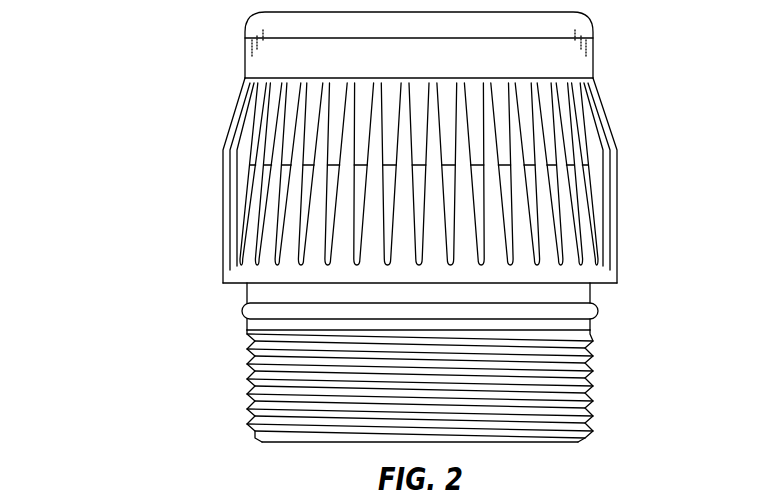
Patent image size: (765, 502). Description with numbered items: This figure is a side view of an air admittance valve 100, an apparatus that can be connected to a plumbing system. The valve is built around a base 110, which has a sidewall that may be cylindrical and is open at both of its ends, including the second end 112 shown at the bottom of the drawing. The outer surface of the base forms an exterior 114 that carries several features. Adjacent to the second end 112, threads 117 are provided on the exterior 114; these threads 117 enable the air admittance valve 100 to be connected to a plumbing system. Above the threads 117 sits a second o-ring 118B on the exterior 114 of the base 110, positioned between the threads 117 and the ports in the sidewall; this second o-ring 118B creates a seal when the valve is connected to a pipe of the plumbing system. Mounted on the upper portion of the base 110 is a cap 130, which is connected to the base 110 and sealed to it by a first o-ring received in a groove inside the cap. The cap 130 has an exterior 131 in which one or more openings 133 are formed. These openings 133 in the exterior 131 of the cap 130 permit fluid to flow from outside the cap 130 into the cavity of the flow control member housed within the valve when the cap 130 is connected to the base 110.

The air admittance valve 100 is at (104, 70).
The base 110 is at (590, 292).
The second end 112 is at (267, 446).
The exterior 114 is at (520, 292).
The threads 117 is at (250, 390).
The second o-ring 118B is at (243, 312).
The cap 130 is at (246, 45).
The exterior 131 is at (226, 272).
The openings 133 is at (280, 160).